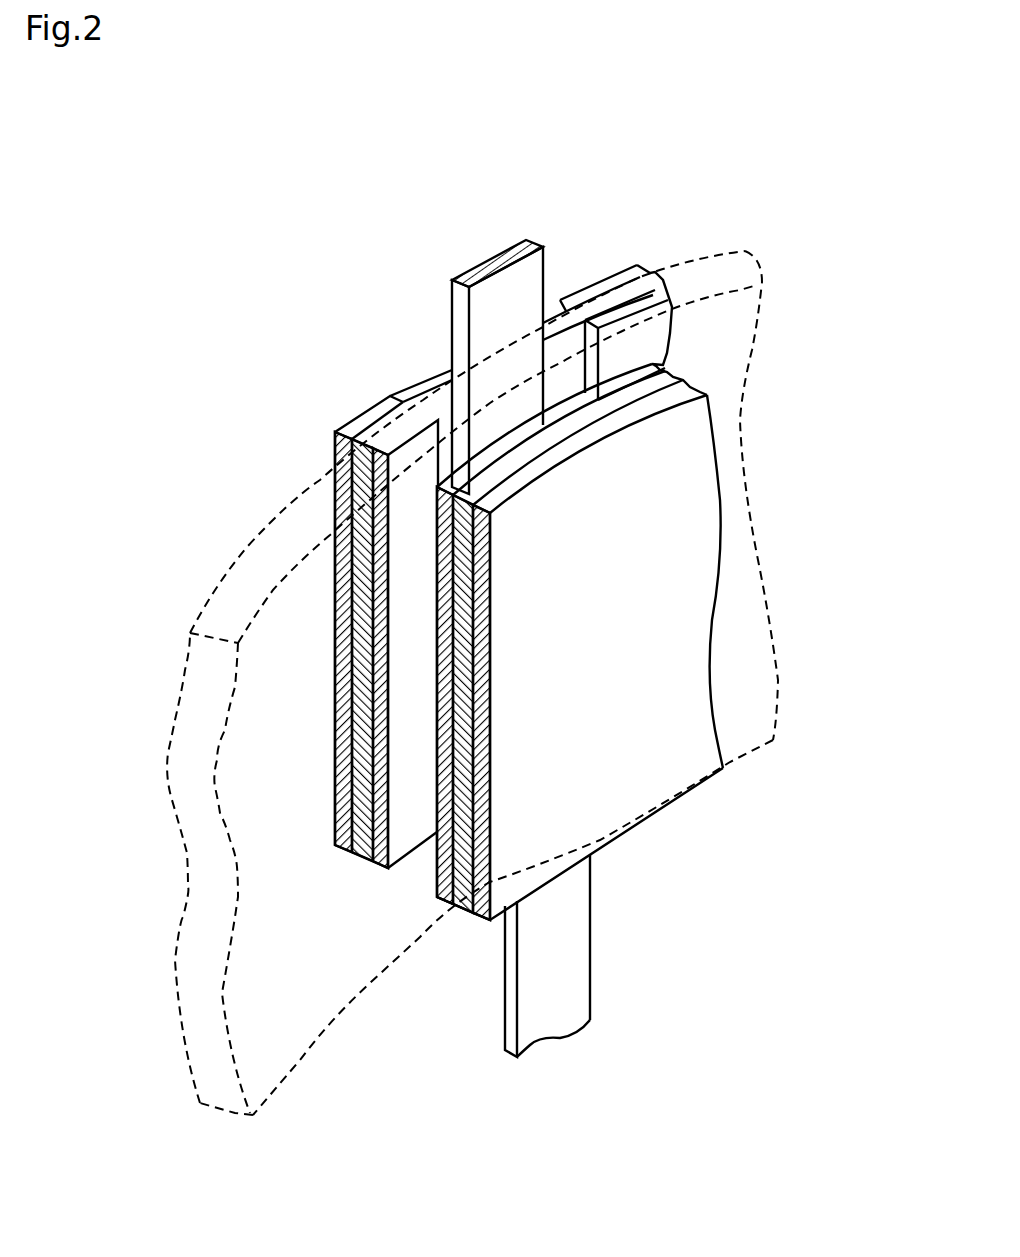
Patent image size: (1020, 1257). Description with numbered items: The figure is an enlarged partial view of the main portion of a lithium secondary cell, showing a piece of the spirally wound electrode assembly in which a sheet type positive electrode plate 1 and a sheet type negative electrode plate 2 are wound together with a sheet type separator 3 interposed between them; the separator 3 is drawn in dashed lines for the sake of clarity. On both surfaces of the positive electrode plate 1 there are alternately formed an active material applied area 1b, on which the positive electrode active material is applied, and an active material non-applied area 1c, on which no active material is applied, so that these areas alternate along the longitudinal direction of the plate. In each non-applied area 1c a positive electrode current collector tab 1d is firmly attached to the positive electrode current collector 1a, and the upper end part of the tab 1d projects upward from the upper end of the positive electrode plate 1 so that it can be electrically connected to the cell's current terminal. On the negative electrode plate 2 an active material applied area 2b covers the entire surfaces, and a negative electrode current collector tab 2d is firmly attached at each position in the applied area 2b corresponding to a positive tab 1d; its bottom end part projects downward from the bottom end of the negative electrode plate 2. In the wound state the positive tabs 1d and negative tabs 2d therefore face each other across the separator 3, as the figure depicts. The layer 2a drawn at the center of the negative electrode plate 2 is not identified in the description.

The positive electrode plate 1 is at (432, 523).
The positive electrode current collector 1a is at (357, 482).
The active material applied area 1b is at (335, 447).
The active material non-applied area 1c is at (445, 408).
The positive electrode current collector tab 1d is at (512, 285).
The negative electrode plate 2 is at (640, 661).
The center layer of second cell 2a is at (478, 703).
The active material applied area 2b is at (488, 750).
The negative electrode current collector tab 2d is at (567, 988).
The separator 3 is at (212, 873).